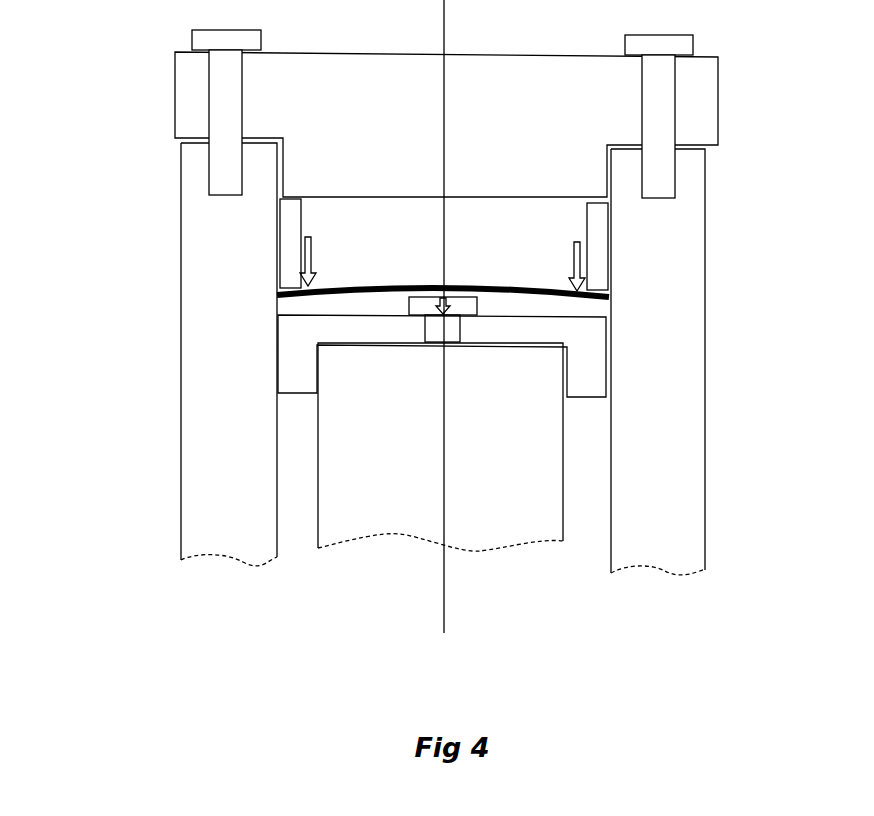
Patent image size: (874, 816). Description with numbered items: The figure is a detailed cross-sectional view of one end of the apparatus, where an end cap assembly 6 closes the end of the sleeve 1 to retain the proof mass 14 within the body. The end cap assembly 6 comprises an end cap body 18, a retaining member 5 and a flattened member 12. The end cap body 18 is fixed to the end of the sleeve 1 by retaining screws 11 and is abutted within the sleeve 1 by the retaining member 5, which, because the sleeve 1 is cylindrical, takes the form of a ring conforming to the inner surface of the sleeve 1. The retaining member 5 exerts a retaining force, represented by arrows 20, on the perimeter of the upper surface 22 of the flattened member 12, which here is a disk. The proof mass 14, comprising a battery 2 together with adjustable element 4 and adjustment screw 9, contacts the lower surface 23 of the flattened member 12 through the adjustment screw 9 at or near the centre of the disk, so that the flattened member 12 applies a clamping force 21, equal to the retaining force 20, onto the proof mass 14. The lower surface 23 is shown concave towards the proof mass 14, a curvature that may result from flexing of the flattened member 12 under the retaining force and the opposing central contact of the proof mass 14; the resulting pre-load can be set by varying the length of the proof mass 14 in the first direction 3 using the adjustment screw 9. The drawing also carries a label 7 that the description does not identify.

The sleeve 1 is at (215, 313).
The battery 2 is at (405, 483).
The first direction 3 is at (440, 586).
The adjustable element 4 is at (298, 358).
The retaining member 5 is at (289, 247).
The end cap assembly 6 is at (123, 67).
The gap 7 is at (293, 496).
The adjustment screw 9 is at (443, 325).
The retaining screws 11 is at (264, 38).
The flattened member 12 is at (612, 297).
The proof mass 14 is at (475, 572).
The end cap body 18 is at (436, 88).
The retaining force arrows 20 is at (563, 240).
The clamping force 21 is at (455, 302).
The upper surface 22 is at (380, 287).
The lower surface 23 is at (365, 298).